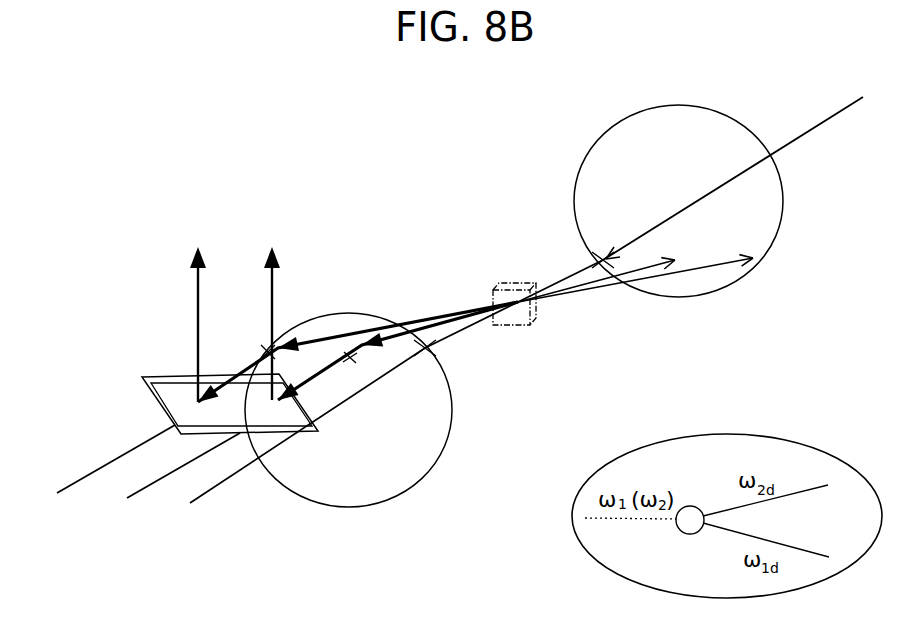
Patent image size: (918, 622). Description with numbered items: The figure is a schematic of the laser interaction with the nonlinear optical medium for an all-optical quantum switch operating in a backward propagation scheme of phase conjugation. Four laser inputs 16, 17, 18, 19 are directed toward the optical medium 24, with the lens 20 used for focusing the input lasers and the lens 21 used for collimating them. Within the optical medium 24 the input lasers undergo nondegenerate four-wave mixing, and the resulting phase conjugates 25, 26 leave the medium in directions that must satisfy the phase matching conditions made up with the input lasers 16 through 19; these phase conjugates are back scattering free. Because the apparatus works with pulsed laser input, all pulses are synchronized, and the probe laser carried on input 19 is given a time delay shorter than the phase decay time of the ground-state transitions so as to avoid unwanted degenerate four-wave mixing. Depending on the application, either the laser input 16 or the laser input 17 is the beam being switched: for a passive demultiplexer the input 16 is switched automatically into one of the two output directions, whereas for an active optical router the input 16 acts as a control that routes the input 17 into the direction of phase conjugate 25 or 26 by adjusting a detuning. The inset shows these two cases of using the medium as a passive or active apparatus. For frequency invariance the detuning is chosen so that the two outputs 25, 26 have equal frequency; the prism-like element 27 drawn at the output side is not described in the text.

The laser input 16 is at (75, 477).
The laser input 17 is at (157, 482).
The laser input 18 is at (242, 473).
The laser input 19 is at (801, 134).
The lens 20 is at (450, 437).
The lens 21 is at (587, 158).
The optical medium 24 is at (515, 325).
The phase conjugate 25 is at (197, 343).
The phase conjugate 26 is at (273, 301).
The beam splitting prism 27 is at (147, 376).